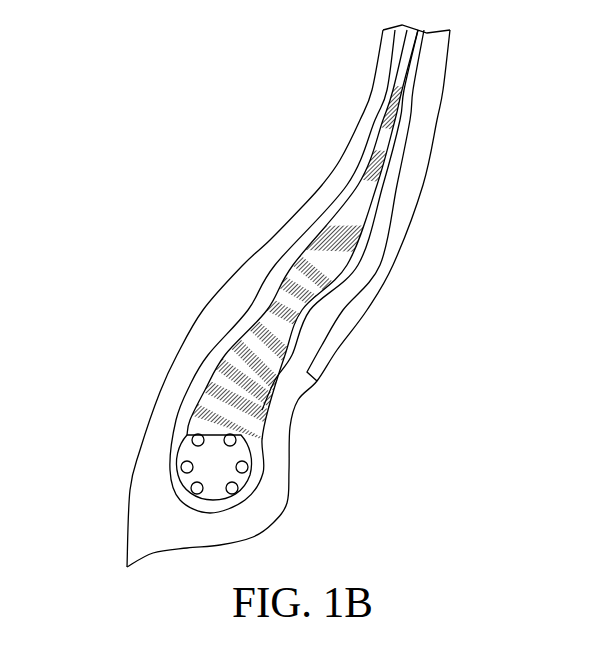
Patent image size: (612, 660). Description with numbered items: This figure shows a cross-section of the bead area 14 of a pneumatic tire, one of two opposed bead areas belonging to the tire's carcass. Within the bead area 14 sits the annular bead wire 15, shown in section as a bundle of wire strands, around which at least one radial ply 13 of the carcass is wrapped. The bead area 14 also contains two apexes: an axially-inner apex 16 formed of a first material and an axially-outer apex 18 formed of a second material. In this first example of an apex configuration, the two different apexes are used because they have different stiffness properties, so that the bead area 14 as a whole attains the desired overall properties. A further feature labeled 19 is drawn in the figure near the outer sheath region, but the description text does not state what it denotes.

The radial ply 13 is at (293, 262).
The bead area 14 is at (298, 490).
The annular bead wire 15 is at (208, 490).
The axially-inner apex 16 is at (263, 320).
The axially-outer apex 18 is at (352, 207).
The slit in outer sheath 19 is at (320, 300).